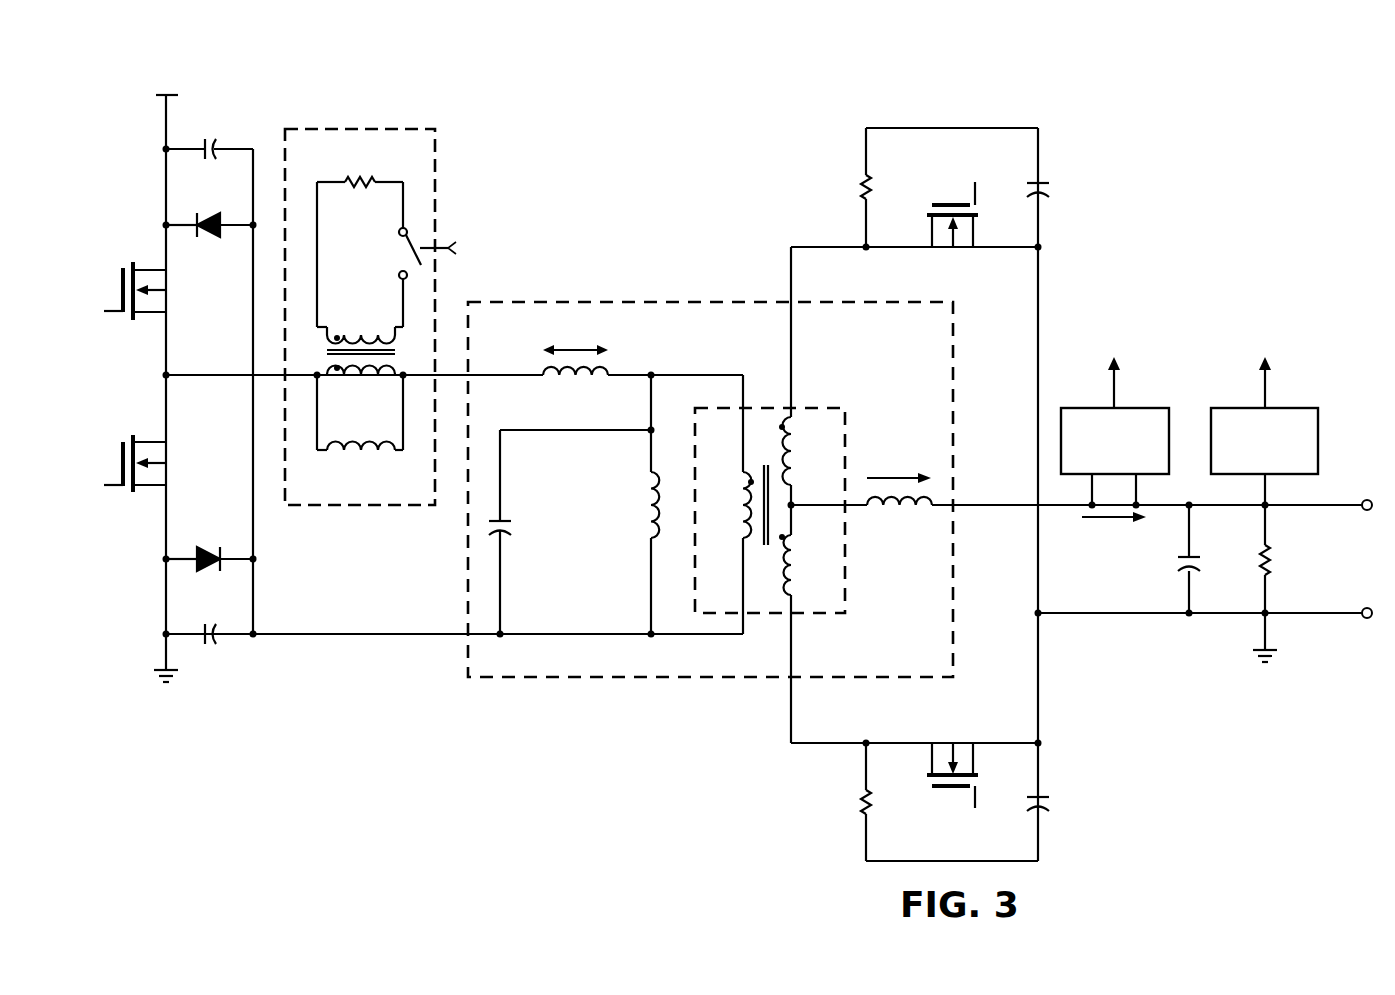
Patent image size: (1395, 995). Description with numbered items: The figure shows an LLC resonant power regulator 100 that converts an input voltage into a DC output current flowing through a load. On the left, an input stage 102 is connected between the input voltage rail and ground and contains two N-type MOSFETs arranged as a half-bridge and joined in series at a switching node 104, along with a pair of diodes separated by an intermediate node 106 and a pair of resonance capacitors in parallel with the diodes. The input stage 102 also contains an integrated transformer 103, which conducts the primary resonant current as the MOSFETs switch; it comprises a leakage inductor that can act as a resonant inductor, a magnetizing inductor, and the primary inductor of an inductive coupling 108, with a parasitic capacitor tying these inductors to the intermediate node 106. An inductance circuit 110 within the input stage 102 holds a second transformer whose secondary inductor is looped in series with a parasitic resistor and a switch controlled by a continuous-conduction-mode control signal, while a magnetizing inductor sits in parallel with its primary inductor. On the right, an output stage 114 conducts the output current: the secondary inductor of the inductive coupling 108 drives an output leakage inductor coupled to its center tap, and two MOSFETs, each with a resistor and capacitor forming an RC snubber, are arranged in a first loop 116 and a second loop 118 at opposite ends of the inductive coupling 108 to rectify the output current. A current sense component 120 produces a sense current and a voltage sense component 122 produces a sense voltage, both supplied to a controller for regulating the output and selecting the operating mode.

The LLC resonant power regulator 100 is at (487, 78).
The input stage 102 is at (510, 204).
The integrated transformer 103 is at (629, 297).
The switching node 104 is at (130, 379).
The intermediate node 106 is at (242, 653).
The inductive coupling 108 is at (810, 404).
The inductance circuit 110 is at (317, 126).
The output stage 114 is at (1096, 159).
The first loop 116 is at (809, 159).
The second loop 118 is at (810, 849).
The current sense component 120 is at (1148, 407).
The voltage sense component 122 is at (1299, 407).